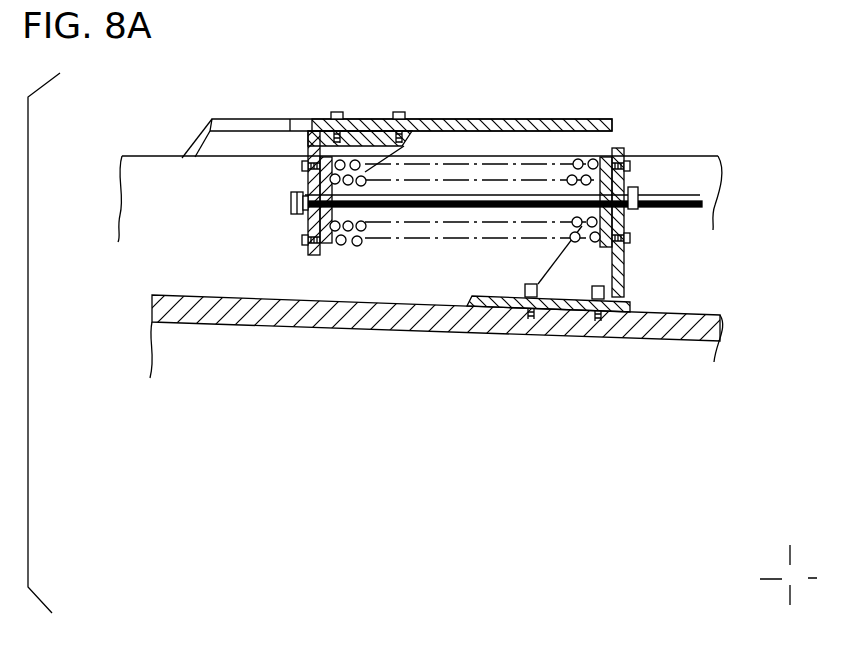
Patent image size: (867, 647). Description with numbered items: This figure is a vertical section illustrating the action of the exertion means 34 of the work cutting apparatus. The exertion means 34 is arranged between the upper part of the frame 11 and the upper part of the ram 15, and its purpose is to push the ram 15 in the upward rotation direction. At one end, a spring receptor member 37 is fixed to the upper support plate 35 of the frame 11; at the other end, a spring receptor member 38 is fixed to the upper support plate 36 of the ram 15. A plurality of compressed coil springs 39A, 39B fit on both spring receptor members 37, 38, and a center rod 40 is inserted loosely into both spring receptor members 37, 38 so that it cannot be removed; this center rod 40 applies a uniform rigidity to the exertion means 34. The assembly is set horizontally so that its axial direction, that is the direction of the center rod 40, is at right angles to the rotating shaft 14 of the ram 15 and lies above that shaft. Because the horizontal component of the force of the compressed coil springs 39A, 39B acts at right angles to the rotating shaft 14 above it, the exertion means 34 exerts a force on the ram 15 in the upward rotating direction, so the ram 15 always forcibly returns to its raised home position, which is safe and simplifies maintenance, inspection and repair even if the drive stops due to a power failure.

The frame 11 is at (698, 153).
The rotating shaft 14 is at (788, 578).
The ram 15 is at (708, 313).
The exertion means 34 is at (541, 152).
The upper support plate 35 is at (460, 119).
The upper support plate 36 is at (503, 291).
The spring receptor member 37 is at (300, 196).
The spring receptor member 38 is at (625, 272).
The compressed coil spring 39A is at (346, 252).
The compressed coil spring 39B is at (570, 215).
The center rod 40 is at (700, 193).